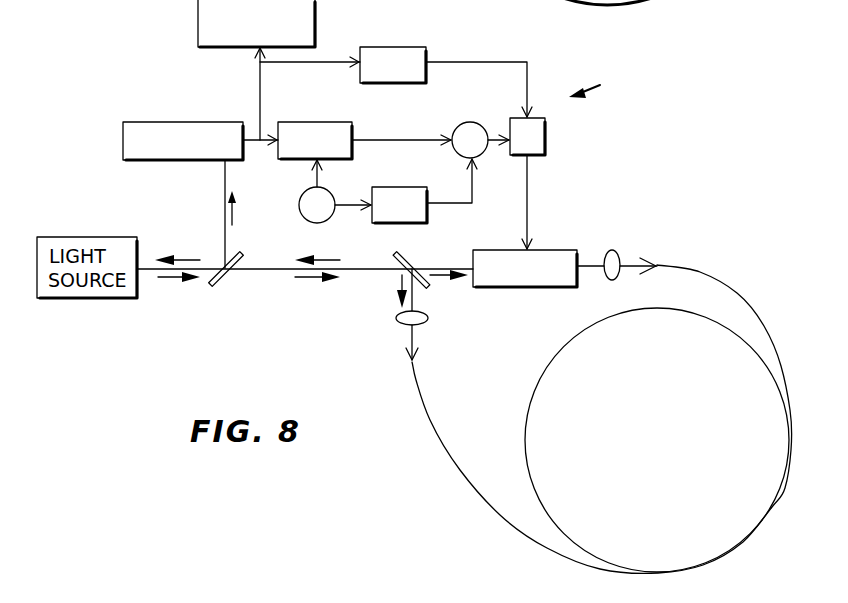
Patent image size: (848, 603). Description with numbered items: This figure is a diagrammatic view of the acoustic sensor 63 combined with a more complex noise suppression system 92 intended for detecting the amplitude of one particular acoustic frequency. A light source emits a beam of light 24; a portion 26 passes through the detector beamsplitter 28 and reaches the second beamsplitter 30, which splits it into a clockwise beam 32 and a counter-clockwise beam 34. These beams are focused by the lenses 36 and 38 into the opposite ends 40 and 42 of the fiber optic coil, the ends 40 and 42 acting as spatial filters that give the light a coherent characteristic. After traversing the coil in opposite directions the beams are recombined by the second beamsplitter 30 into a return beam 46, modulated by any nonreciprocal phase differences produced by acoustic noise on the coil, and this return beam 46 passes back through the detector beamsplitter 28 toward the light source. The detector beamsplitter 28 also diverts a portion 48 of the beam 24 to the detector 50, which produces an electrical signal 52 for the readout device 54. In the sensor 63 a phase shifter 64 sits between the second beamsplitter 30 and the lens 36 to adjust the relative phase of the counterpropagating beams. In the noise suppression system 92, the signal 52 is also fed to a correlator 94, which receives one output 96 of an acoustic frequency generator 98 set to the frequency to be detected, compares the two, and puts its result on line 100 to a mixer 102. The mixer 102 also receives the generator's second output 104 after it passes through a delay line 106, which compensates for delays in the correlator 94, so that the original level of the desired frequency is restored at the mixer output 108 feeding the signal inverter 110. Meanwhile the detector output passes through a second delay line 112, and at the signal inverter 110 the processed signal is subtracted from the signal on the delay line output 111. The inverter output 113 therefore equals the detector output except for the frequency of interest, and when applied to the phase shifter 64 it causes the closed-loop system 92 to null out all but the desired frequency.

The beam of light 24 is at (162, 282).
The portion of the beam 26 is at (300, 282).
The detector beamsplitter 28 is at (260, 300).
The second beamsplitter 30 is at (412, 264).
The clockwise beam 32 is at (450, 279).
The counter-clockwise beam 34 is at (400, 277).
The lens 36 is at (613, 250).
The lens 38 is at (428, 320).
The end of the fiber optic coil 40 is at (654, 262).
The end of the fiber optic coil 42 is at (416, 363).
The return beam 46 is at (187, 259).
The portion of the beam 48 is at (225, 215).
The detector 50 is at (134, 122).
The electrical signal 52 is at (260, 128).
The readout device 54 is at (198, 32).
The sensor 63 is at (722, 268).
The phase shifter 64 is at (517, 289).
The noise suppression system 92 is at (608, 87).
The correlator 94 is at (343, 122).
The output of the acoustic frequency generator 96 is at (313, 183).
The acoustic frequency generator 98 is at (300, 213).
The output signal line 100 is at (379, 140).
The mixer 102 is at (466, 122).
The second output of the generator 104 is at (353, 204).
The delay line 106 is at (429, 217).
The output of the mixer 108 is at (493, 145).
The signal inverter 110 is at (546, 134).
The output of the delay line 111 is at (527, 80).
The second delay line 112 is at (428, 54).
The output of the signal inverter 113 is at (528, 213).